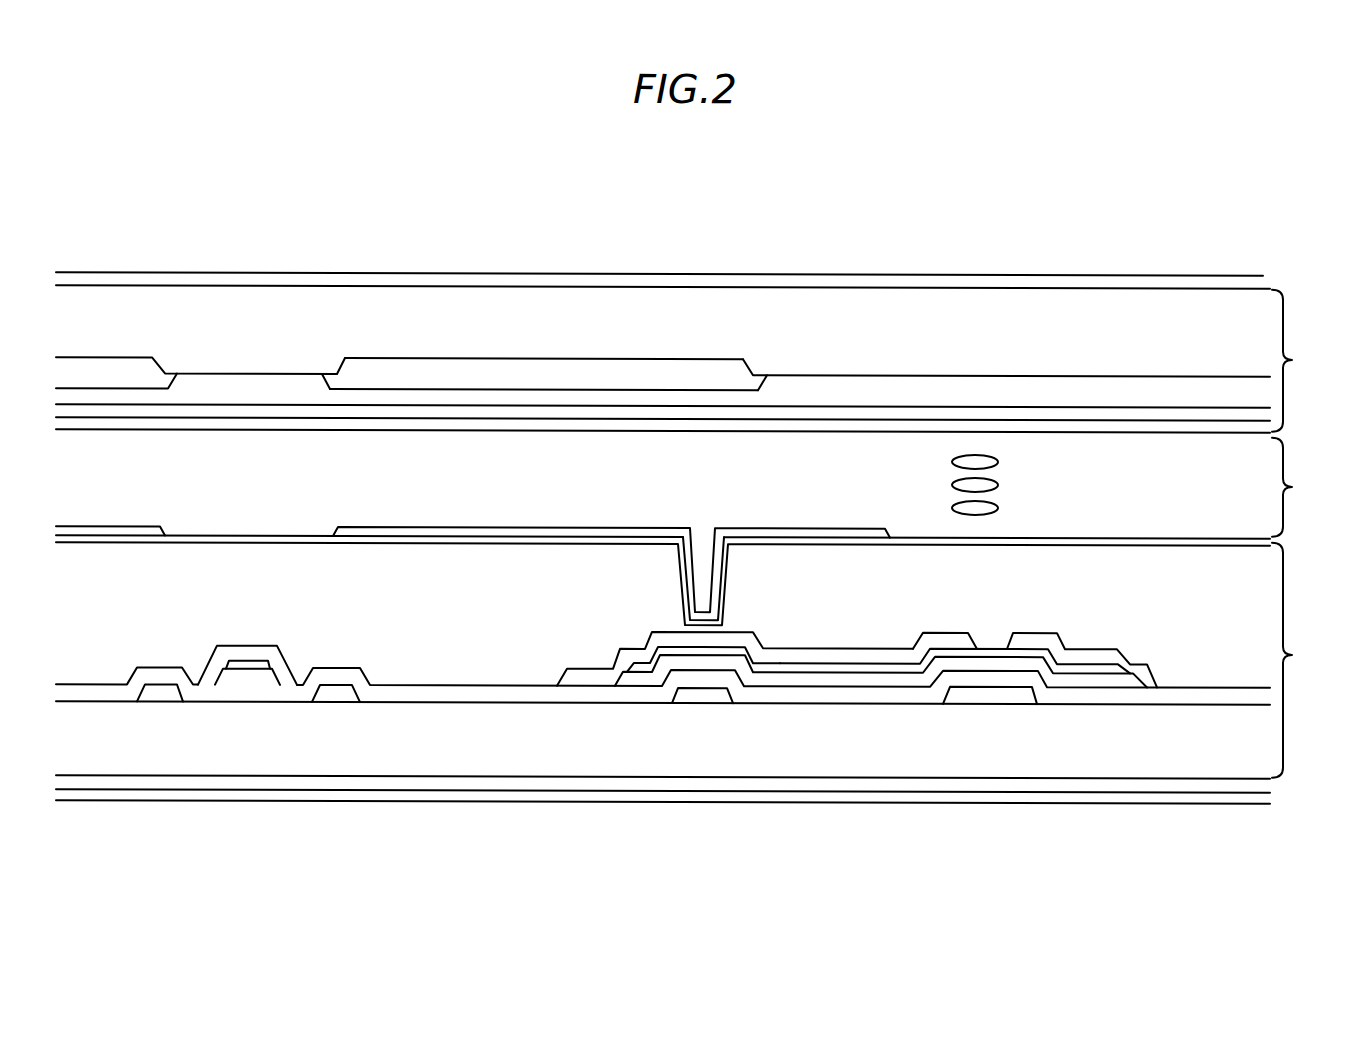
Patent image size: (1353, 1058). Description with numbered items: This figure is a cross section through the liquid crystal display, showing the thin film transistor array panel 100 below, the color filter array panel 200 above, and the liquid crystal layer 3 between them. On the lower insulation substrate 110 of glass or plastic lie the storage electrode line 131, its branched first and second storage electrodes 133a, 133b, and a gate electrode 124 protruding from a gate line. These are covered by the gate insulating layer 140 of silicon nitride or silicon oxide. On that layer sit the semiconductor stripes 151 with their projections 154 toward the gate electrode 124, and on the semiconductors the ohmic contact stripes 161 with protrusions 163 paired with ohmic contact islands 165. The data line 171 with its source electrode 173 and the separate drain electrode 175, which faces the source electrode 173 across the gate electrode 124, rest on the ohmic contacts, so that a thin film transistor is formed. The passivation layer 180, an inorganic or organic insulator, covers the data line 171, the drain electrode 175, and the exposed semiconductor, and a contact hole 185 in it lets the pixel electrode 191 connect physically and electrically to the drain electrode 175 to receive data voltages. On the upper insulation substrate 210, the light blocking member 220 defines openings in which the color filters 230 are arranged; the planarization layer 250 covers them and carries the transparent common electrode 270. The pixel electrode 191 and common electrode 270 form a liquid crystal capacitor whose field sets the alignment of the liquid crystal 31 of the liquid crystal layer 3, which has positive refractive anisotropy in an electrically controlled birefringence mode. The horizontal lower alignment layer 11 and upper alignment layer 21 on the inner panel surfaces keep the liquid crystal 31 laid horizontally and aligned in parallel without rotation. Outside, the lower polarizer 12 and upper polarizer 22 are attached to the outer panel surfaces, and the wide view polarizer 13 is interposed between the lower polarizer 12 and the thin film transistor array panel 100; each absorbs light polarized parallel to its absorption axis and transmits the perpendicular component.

The upper polarizer 22 is at (950, 284).
The insulation substrate 210 is at (565, 305).
The light blocking member 220 is at (250, 367).
The color filters 230 is at (445, 375).
The planarization layer 250 is at (1050, 397).
The common electrode 270 is at (1182, 414).
The upper alignment layer 21 is at (1252, 426).
The color filter array panel 200 is at (1304, 361).
The liquid crystal 31 is at (998, 459).
The liquid crystal layer 3 is at (1293, 487).
The lower alignment layer 11 is at (1252, 540).
The pixel electrodes 191 is at (107, 536).
The contact holes 185 is at (683, 583).
The passivation layer 180 is at (470, 666).
The source electrodes 173 is at (1098, 652).
The gate insulating layer 140 is at (88, 693).
The second storage electrode 133b is at (157, 692).
The data lines 171 is at (257, 644).
The semiconductor stripes 151 is at (233, 677).
The ohmic contact stripes 161 is at (254, 663).
The first storage electrode 133a is at (335, 693).
The insulation substrate 110 is at (553, 766).
The storage electrode lines 131 is at (700, 700).
The projections 154 is at (1113, 680).
The ohmic contact islands 165 is at (782, 664).
The drain electrodes 175 is at (852, 650).
The protrusions 163 is at (1077, 665).
The gate electrodes 124 is at (985, 699).
The lower polarizer 12 is at (1185, 789).
The wide view polarizer 13 is at (1235, 800).
The thin film transistor array panel 100 is at (1304, 660).